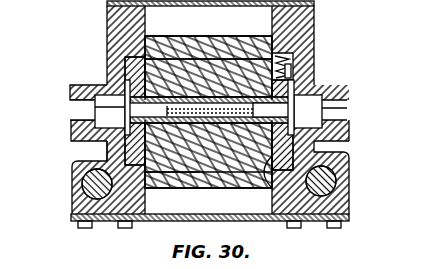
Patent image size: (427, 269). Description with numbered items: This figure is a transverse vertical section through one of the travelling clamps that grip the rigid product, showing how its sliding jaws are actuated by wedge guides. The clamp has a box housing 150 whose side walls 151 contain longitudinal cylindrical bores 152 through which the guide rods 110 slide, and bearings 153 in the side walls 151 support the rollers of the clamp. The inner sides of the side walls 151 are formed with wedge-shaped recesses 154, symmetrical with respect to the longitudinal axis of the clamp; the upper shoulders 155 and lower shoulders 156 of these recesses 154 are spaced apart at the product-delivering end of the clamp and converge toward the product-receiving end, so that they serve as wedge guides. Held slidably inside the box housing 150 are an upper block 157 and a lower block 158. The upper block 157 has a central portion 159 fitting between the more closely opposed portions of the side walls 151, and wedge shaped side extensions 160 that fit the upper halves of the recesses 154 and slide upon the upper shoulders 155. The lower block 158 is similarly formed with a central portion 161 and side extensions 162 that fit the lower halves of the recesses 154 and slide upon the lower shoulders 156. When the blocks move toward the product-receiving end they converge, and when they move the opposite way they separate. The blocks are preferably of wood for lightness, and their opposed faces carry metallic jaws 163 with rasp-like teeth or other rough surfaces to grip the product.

The guide rods 110 is at (347, 181).
The box housing 150 is at (211, 114).
The side walls 151 is at (107, 18).
The longitudinal cylindrical bores 152 is at (349, 199).
The bearings 153 is at (70, 88).
The wedge-shaped recesses 154 is at (296, 77).
The upper shoulders 155 is at (268, 52).
The lower shoulders 156 is at (266, 166).
The upper block 157 is at (184, 50).
The lower block 158 is at (186, 186).
The central portion 159 is at (220, 50).
The wedge shaped side extensions 160 is at (107, 58).
The central portion 161 is at (222, 184).
The side extensions 162 is at (107, 147).
The metallic jaws 163 is at (125, 115).